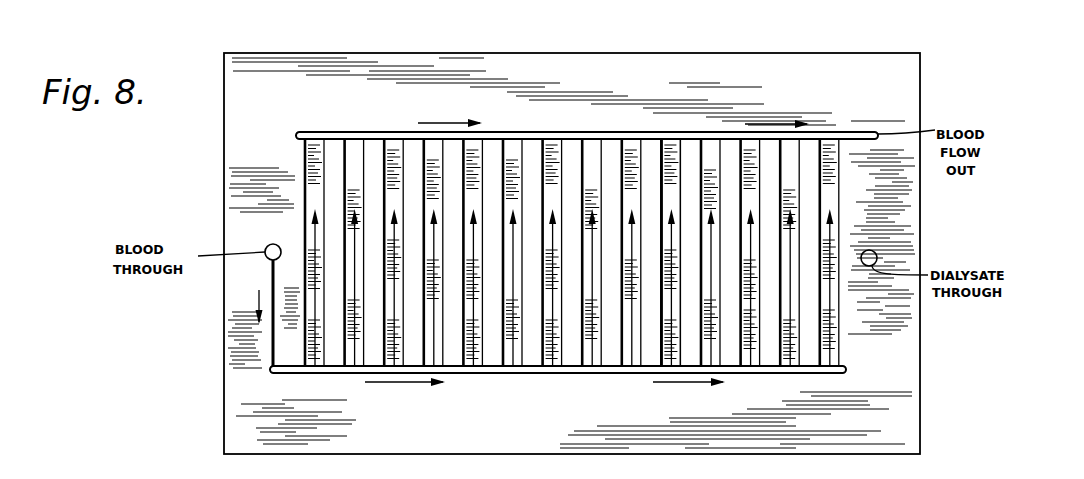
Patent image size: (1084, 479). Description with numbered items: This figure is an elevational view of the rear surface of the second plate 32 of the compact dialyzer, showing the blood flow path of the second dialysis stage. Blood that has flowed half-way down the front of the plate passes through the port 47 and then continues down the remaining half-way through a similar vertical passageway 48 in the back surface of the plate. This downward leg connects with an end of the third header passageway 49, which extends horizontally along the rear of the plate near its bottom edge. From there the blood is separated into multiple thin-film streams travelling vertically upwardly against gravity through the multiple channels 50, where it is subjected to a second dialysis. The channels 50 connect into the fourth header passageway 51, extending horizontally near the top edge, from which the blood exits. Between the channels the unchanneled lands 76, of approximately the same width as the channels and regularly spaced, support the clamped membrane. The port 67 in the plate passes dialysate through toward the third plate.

The second plate 32 is at (862, 65).
The port 47 is at (267, 246).
The vertical passageway 48 is at (272, 341).
The third header passageway 49 is at (473, 373).
The channels 50 is at (588, 358).
The fourth header passageway 51 is at (570, 134).
The lands 76 is at (690, 152).
The port 67 is at (878, 253).